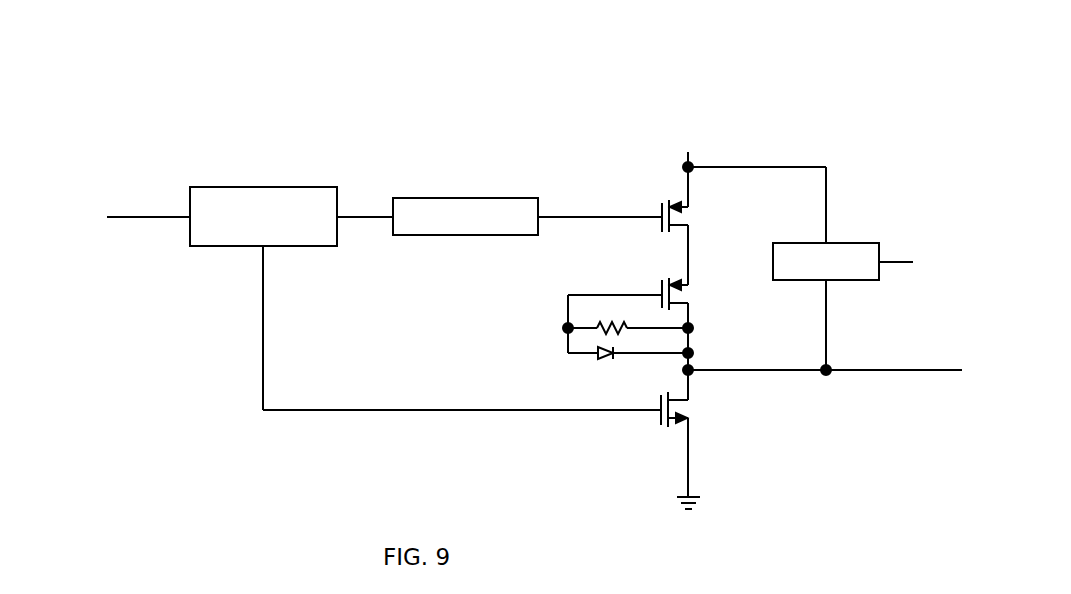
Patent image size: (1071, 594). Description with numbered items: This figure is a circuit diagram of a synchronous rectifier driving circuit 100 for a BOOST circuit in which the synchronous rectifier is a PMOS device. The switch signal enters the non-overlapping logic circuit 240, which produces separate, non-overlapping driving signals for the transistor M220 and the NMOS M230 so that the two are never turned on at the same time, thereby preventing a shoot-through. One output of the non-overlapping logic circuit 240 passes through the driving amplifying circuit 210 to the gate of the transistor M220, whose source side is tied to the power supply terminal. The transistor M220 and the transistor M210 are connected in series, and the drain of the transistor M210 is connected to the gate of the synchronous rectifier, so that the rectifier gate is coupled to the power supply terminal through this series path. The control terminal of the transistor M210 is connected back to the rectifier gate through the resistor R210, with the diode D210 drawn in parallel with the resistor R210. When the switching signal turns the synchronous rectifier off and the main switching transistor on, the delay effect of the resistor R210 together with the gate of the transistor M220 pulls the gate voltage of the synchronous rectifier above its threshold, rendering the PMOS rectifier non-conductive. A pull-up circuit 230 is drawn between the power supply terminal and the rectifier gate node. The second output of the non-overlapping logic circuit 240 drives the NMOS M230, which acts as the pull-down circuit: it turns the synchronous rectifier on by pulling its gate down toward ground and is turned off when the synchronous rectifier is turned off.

The synchronous rectifier driving circuit 100 is at (249, 93).
The non-overlapping logic circuit 240 is at (263, 216).
The driving amplifying circuit 210 is at (465, 216).
The pull-up circuit 230 is at (843, 268).
The transistor M220 is at (705, 216).
The transistor M210 is at (704, 306).
The NMOS M230 is at (700, 409).
The resistor R210 is at (628, 318).
The diode D210 is at (628, 366).